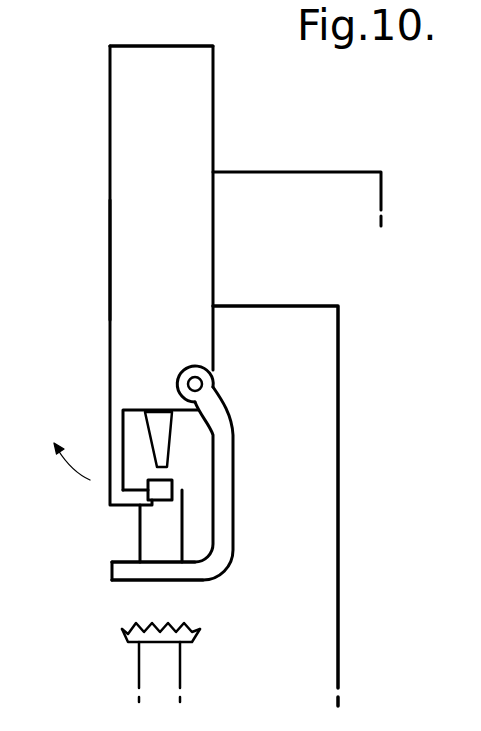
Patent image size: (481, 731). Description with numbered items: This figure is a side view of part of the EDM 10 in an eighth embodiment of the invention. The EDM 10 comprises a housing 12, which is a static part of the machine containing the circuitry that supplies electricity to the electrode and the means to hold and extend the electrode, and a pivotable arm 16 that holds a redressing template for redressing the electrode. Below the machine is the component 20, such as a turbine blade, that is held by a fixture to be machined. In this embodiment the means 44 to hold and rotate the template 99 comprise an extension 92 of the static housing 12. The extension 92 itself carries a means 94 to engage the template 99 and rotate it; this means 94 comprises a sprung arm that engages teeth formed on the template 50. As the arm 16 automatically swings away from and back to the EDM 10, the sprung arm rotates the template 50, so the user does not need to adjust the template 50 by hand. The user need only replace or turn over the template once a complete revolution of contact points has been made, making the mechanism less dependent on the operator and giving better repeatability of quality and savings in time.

The EDM 10 is at (86, 113).
The housing 12 is at (187, 134).
The means to hold and rotate a template 44 is at (89, 279).
The extension 92 is at (115, 438).
The means to engage the template and rotate it 94 is at (138, 517).
The template 50 is at (183, 485).
The pivotable arm 16 is at (222, 503).
The template 99 is at (170, 543).
The component 20 is at (170, 655).